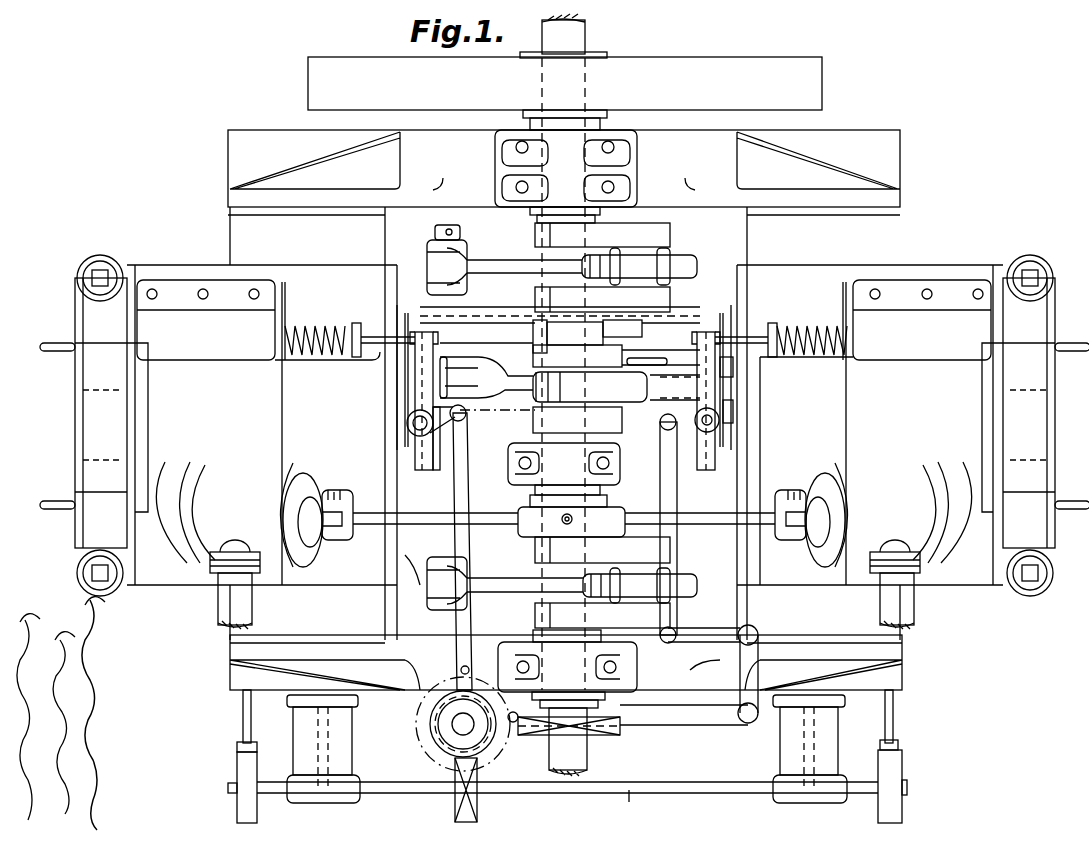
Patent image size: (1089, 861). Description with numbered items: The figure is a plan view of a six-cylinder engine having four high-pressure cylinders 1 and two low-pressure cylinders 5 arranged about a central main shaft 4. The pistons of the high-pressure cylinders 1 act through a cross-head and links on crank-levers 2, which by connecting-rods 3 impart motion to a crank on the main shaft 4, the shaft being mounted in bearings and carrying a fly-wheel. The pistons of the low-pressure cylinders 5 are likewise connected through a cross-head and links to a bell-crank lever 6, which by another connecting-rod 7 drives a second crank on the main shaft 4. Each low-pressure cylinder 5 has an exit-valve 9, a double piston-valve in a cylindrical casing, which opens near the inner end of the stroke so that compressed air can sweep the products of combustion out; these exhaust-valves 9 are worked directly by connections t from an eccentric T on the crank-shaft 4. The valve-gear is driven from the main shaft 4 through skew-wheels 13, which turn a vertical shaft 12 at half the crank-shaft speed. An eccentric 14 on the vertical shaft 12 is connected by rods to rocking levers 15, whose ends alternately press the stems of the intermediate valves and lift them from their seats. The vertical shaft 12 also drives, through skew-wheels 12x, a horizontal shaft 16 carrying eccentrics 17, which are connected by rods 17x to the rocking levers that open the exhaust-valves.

The high-pressure cylinder 1 is at (565, 385).
The crank-lever 2 is at (488, 256).
The connecting-rod 3 is at (533, 266).
The main shaft 4 is at (599, 760).
The low-pressure cylinder 5 is at (564, 425).
The bell-crank lever 6 is at (543, 379).
The connecting-rod 7 is at (496, 412).
The exit-valve 9 is at (565, 546).
The vertical shaft 12 is at (455, 727).
The skew-wheels 12x is at (478, 796).
The skew-wheels 13 is at (522, 738).
The eccentric 14 is at (432, 700).
The rocking lever 15 is at (415, 386).
The horizontal shaft 16 is at (566, 730).
The eccentric 17 is at (248, 814).
The rod 17x is at (243, 716).
The connection t is at (713, 525).
The eccentric T is at (564, 522).